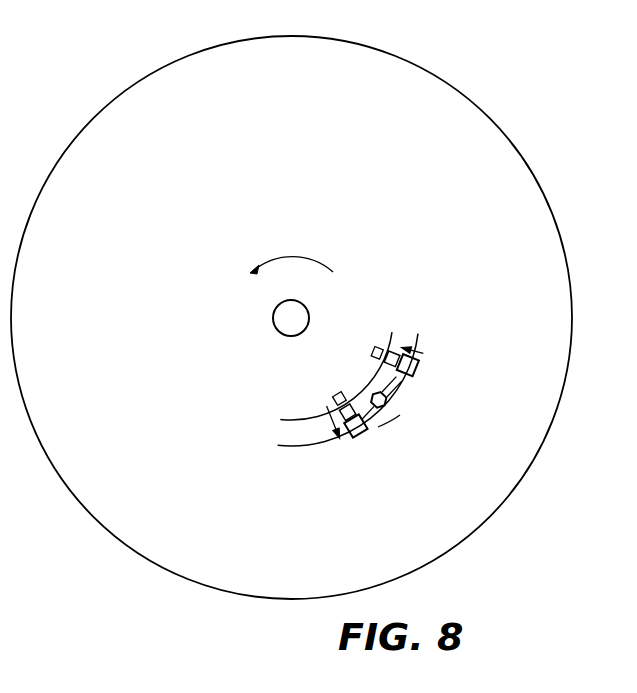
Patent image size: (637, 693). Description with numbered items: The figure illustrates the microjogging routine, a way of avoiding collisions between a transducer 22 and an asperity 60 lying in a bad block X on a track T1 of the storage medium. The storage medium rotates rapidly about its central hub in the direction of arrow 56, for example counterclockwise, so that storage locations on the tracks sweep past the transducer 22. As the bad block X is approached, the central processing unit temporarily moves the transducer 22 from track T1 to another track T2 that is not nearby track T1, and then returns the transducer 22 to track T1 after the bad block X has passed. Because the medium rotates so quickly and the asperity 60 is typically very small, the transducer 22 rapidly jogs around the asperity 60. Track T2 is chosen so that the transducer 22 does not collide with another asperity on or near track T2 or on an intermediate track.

The arrow 56 is at (292, 258).
The transducer 22 is at (373, 353).
The asperity 60 is at (373, 397).
The track T1 is at (418, 333).
The track T2 is at (393, 333).
The bad block X is at (408, 383).